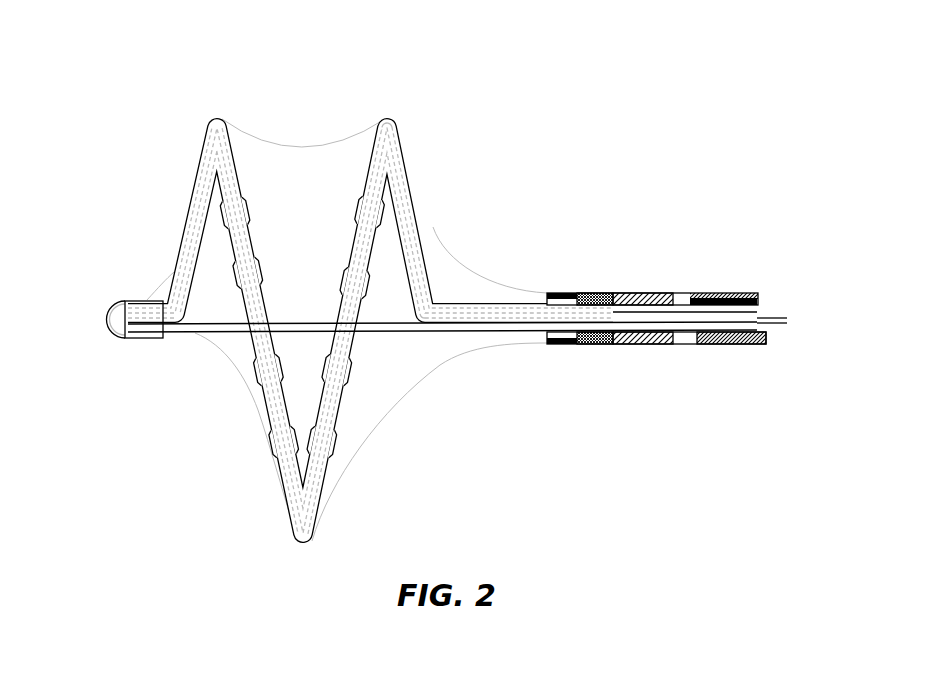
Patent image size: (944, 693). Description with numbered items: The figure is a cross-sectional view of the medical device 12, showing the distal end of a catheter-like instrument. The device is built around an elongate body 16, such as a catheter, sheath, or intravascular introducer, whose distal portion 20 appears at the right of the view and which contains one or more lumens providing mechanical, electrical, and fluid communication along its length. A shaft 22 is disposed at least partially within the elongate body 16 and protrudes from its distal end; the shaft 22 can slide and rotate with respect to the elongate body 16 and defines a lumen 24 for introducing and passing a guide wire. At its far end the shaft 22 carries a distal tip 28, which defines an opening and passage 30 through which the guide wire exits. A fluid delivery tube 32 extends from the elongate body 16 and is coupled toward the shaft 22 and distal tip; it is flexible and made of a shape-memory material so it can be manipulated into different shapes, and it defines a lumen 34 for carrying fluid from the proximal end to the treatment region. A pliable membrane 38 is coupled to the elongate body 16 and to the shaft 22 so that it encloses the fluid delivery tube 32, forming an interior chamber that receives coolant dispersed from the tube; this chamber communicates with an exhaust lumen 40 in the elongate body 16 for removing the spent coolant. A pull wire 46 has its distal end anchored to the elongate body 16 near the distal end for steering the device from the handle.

The medical device 12 is at (318, 68).
The elongate body 16 is at (656, 365).
The distal portion 20 is at (585, 294).
The shaft 22 is at (203, 330).
The lumen 24 is at (768, 327).
The distal tip 28 is at (115, 300).
The opening and passage 30 is at (108, 333).
The fluid delivery tube 32 is at (408, 172).
The lumen 34 is at (338, 390).
The membrane 38 is at (346, 133).
The exhaust lumen 40 is at (757, 315).
The pull wire 46 is at (673, 294).